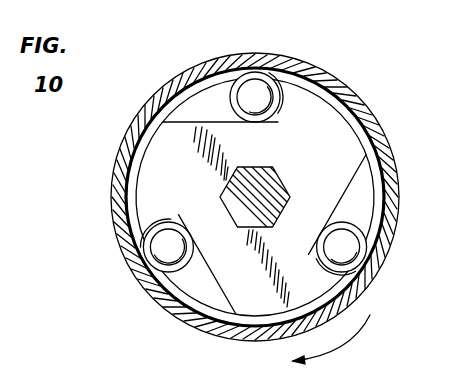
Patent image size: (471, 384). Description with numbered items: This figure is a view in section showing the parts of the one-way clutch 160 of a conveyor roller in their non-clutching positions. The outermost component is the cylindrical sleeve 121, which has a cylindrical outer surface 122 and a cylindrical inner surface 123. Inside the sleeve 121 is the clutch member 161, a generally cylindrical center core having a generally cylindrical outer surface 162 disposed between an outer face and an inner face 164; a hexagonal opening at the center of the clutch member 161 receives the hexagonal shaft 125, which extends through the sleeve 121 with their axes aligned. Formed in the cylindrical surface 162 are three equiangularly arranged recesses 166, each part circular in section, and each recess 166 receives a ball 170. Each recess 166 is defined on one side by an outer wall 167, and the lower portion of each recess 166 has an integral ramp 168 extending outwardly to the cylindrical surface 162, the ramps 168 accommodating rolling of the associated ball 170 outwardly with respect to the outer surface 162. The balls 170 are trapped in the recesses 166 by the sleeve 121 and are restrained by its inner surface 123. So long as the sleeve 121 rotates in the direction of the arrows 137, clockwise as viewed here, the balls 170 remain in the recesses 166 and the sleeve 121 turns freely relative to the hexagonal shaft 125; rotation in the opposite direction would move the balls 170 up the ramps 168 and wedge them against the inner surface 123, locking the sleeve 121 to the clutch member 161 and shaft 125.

The cylindrical sleeve 121 is at (126, 135).
The cylindrical outer surface 122 is at (118, 155).
The cylindrical inner surface 123 is at (133, 208).
The hexagonal shaft 125 is at (268, 187).
The arrows 137 is at (385, 352).
The one-way clutch 160 is at (203, 80).
The clutch member 161 is at (323, 125).
The cylindrical outer surface 162 is at (125, 171).
The inner face 164 is at (193, 178).
The recess 166 is at (277, 77).
The outer wall 167 is at (198, 107).
The ramp 168 is at (195, 112).
The ball 170 is at (251, 80).